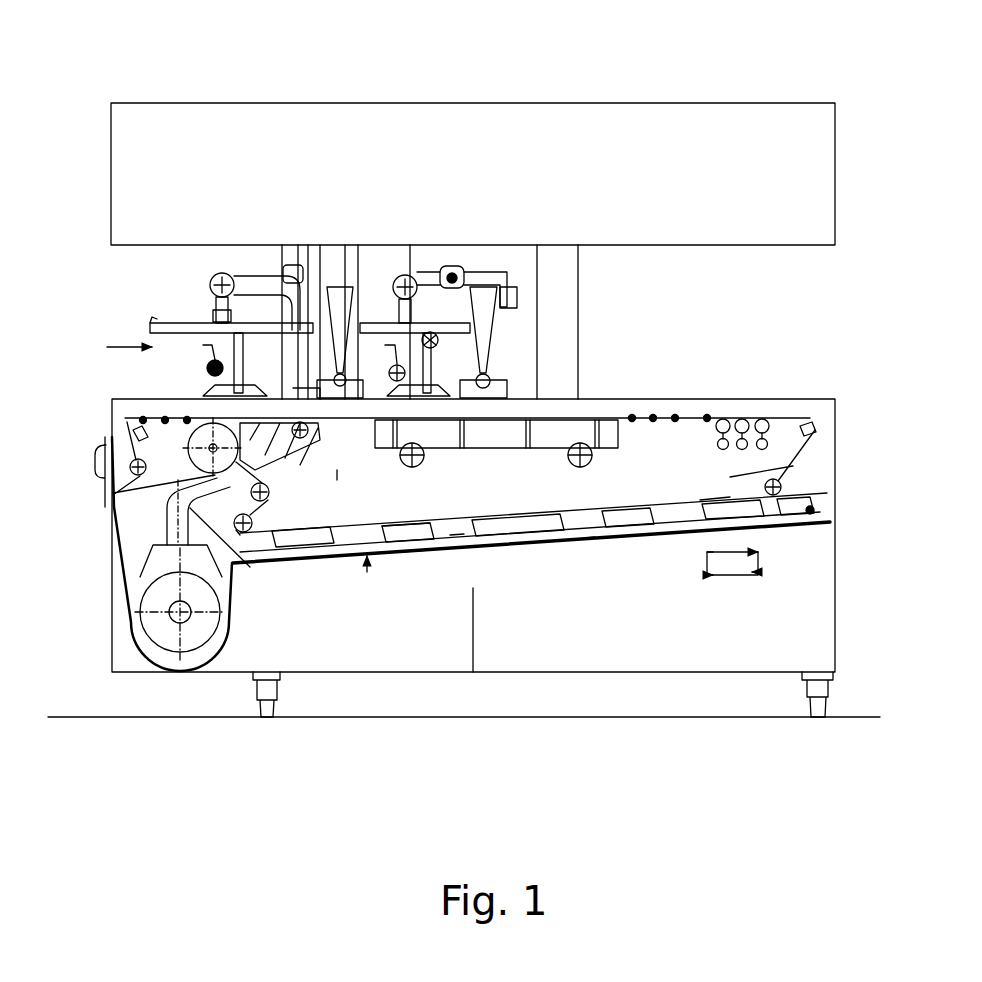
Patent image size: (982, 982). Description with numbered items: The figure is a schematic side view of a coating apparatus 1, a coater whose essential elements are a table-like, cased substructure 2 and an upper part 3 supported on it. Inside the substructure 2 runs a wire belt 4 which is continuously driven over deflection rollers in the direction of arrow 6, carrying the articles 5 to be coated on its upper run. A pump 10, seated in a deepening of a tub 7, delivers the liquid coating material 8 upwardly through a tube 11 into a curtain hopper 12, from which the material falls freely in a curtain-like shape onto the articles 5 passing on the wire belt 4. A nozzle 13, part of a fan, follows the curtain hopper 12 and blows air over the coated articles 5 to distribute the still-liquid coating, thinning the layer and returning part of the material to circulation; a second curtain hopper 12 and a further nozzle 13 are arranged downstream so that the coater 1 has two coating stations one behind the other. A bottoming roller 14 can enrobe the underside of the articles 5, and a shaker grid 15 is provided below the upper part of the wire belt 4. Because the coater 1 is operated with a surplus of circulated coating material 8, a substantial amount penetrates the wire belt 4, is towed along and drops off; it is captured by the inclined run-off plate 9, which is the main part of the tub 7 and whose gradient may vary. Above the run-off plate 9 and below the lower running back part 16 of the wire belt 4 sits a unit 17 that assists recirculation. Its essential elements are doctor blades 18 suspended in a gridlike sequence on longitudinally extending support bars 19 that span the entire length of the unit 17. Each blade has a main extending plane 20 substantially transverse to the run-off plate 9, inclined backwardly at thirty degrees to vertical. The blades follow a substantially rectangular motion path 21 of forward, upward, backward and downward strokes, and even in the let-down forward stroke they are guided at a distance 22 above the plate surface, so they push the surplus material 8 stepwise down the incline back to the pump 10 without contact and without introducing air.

The apparatus 1 is at (178, 80).
The substructure 2 is at (838, 578).
The upper part 3 is at (256, 103).
The wire belt 4 is at (597, 507).
The articles 5 is at (187, 420).
The arrow 6 is at (107, 347).
The tub 7 is at (122, 565).
The liquid coating material 8 is at (252, 570).
The run-off plate 9 is at (590, 540).
The pump 10 is at (160, 623).
The tube 11 is at (173, 527).
The curtain hopper 12 is at (452, 274).
The nozzle 13 is at (345, 372).
The bottoming roller 14 is at (182, 470).
The shaker grid 15 is at (527, 462).
The lower running back part 16 is at (730, 497).
The unit 17 is at (832, 510).
The doctor blades 18 is at (457, 538).
The support bars 19 is at (412, 540).
The main extending plane 20 is at (717, 418).
The motion path 21 is at (731, 576).
The distance 22 is at (372, 553).